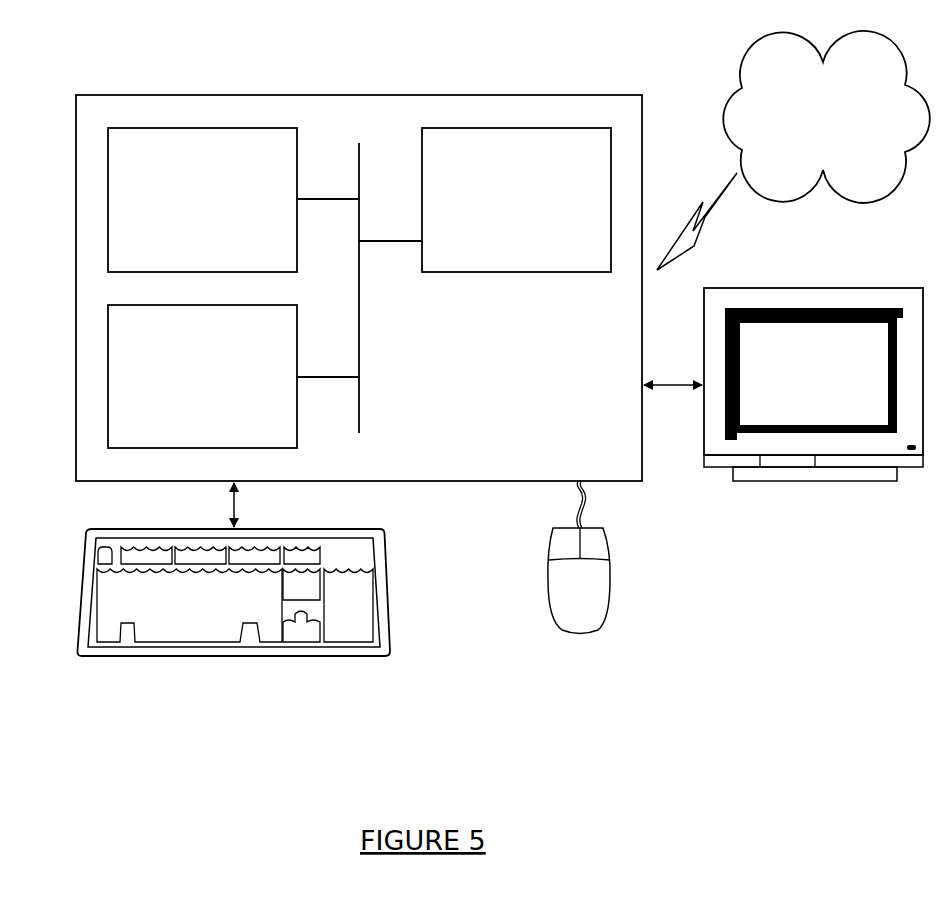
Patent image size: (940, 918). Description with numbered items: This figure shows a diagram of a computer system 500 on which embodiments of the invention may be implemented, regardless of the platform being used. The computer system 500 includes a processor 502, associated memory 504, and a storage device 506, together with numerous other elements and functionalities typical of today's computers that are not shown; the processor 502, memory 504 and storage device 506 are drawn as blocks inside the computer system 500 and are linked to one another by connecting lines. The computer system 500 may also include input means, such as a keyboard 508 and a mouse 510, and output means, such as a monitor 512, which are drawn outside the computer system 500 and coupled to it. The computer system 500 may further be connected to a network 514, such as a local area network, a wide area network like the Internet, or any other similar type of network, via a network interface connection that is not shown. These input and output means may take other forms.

The computer system 500 is at (566, 60).
The processor 502 is at (516, 200).
The memory 504 is at (202, 200).
The storage device 506 is at (202, 376).
The keyboard 508 is at (233, 592).
The mouse 510 is at (579, 557).
The monitor 512 is at (813, 384).
The network 514 is at (793, 150).